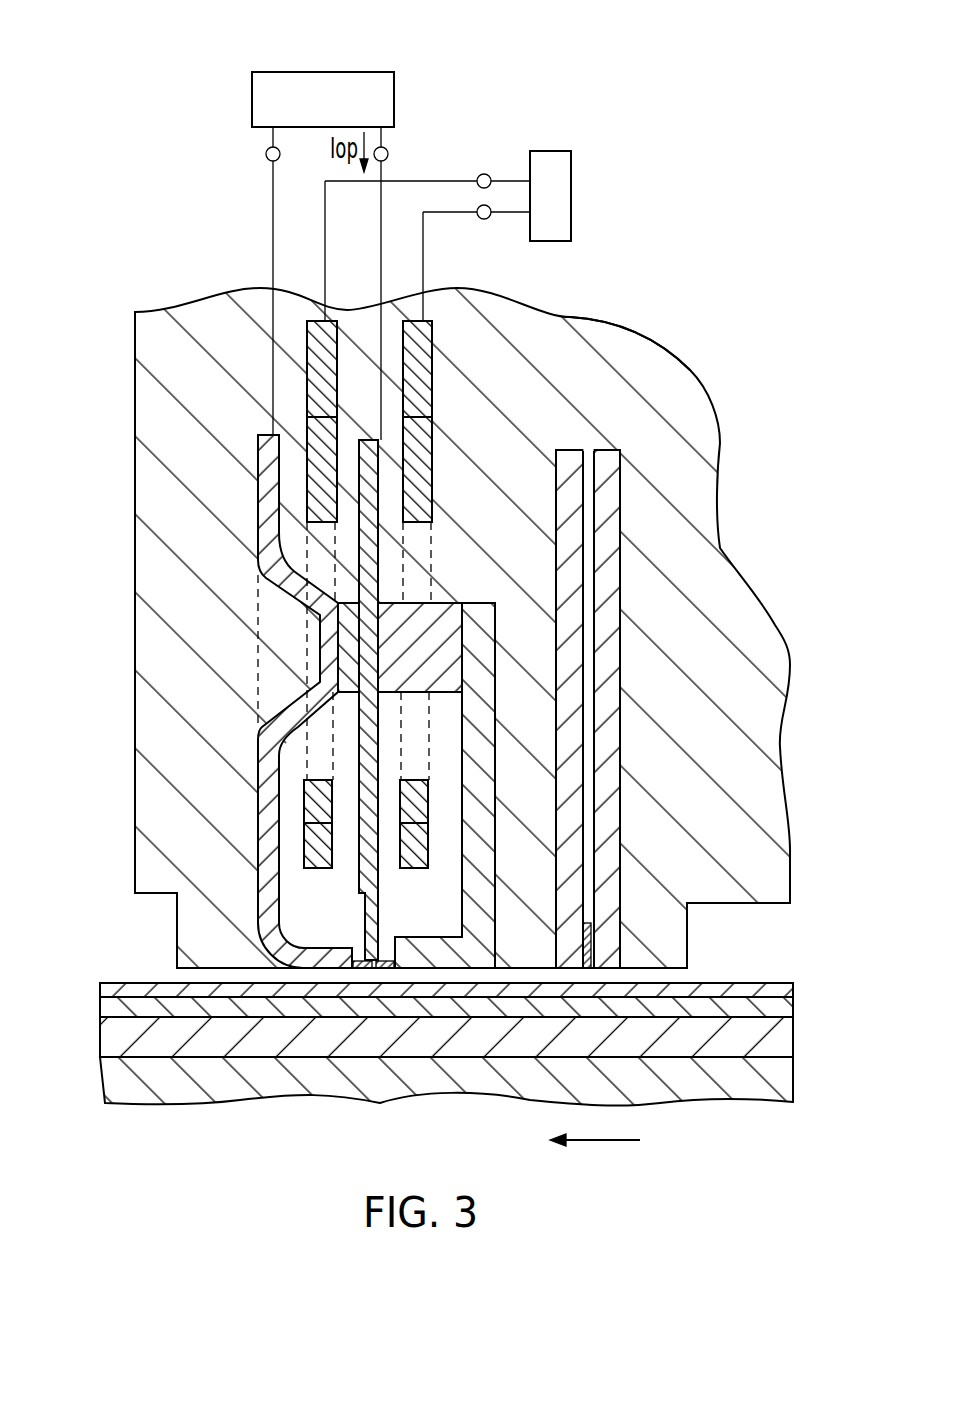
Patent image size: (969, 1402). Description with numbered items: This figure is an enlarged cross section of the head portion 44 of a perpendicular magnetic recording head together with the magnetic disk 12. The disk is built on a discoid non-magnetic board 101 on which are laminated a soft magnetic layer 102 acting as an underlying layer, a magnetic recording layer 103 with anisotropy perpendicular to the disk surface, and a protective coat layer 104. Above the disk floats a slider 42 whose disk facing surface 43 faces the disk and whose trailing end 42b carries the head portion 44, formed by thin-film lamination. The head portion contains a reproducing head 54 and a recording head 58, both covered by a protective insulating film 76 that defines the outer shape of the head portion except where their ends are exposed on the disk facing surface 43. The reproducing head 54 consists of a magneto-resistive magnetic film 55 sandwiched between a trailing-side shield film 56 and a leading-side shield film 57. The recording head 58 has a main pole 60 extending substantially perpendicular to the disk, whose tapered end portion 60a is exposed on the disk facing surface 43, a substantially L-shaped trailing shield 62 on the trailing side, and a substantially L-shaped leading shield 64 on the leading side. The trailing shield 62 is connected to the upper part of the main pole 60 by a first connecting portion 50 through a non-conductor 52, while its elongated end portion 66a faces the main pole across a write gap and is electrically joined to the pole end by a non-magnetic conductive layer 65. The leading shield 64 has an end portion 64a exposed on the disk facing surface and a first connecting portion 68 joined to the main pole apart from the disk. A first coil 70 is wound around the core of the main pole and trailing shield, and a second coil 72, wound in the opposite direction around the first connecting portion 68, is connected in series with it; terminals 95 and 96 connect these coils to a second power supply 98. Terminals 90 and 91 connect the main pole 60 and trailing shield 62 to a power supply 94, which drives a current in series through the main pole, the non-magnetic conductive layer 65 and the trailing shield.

The magnetic disk 12 is at (413, 1074).
The slider 42 is at (705, 425).
The trailing end 42b is at (133, 538).
The disk facing surface 43 is at (723, 903).
The head portion 44 is at (600, 326).
The first connecting portion 50 is at (328, 647).
The non-conductor 52 is at (340, 625).
The reproducing head 54 is at (633, 447).
The magnetic film 55 is at (590, 930).
The shield film 56 is at (613, 648).
The shield film 57 is at (583, 610).
The recording head 58 is at (217, 287).
The main pole 60 is at (375, 912).
The end portion 60a is at (373, 968).
The trailing shield 62 is at (248, 740).
The leading shield 64 is at (490, 732).
The end portion 64a is at (460, 968).
The non-magnetic conductive layer 65 is at (358, 968).
The end portion 66a is at (300, 968).
The first connecting portion 68 is at (447, 610).
The first coil 70 is at (308, 444).
The second coil 72 is at (432, 406).
The protective insulating film 76 is at (153, 323).
The terminal 90 is at (388, 154).
The terminal 91 is at (266, 155).
The power supply 94 is at (252, 96).
The terminal 95 is at (484, 174).
The terminal 96 is at (484, 219).
The second power supply 98 is at (571, 170).
The board 101 is at (105, 1085).
The soft magnetic layer 102 is at (100, 1036).
The magnetic recording layer 103 is at (100, 1005).
The protective coat layer 104 is at (100, 988).